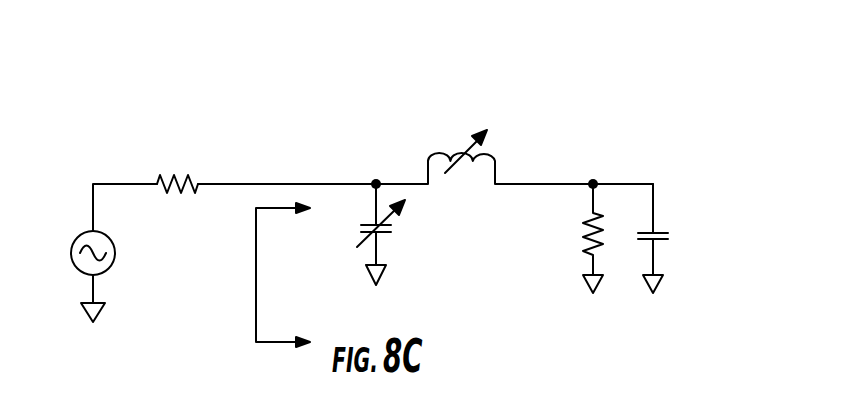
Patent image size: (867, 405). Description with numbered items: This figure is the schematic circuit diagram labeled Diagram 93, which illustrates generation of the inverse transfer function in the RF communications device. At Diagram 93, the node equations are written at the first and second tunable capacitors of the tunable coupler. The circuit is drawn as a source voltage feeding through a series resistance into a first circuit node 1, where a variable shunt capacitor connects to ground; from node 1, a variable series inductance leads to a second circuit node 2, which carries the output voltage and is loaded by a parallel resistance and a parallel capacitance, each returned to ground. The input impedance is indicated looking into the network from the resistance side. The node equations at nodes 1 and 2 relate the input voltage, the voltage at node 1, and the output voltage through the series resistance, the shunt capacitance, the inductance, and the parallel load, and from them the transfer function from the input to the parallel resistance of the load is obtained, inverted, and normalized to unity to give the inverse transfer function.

The diagram 93 is at (417, 225).
The node 1 (input node) 1 is at (376, 169).
The node 2 (output node) 2 is at (592, 170).